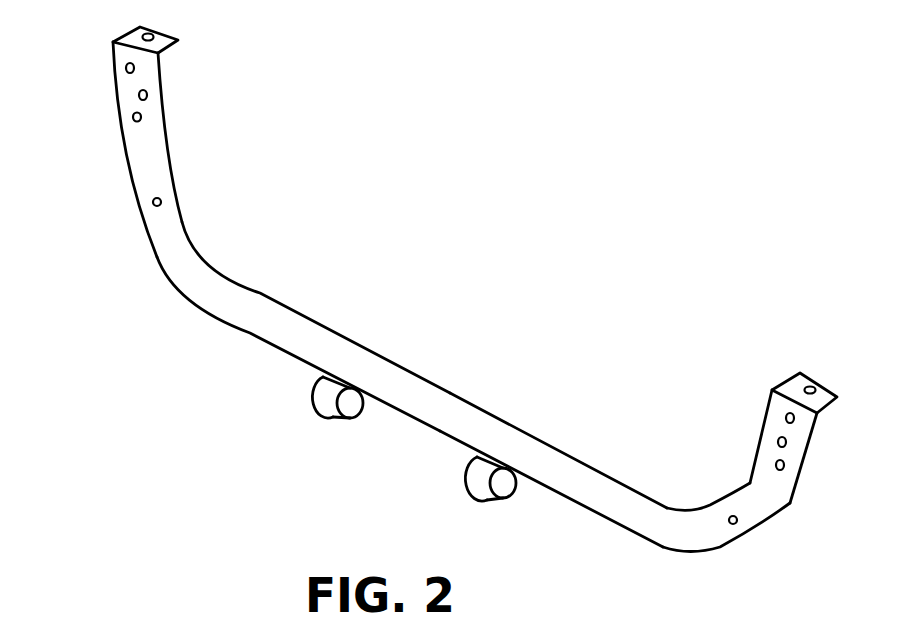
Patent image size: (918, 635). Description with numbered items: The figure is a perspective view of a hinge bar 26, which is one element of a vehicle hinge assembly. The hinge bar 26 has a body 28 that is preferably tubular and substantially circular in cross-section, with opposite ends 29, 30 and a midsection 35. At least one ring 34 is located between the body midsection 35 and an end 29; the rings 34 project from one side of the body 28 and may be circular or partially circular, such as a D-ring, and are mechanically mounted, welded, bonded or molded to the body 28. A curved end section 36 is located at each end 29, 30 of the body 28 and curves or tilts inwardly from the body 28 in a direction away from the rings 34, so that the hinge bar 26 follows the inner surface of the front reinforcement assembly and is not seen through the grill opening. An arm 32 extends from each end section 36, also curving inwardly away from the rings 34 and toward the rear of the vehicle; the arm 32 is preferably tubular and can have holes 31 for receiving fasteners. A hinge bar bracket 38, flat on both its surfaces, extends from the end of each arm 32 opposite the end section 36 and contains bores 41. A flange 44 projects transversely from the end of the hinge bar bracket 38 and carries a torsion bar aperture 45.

The hinge bar 26 is at (575, 483).
The body 28 is at (288, 338).
The end 29 is at (218, 268).
The end 30 is at (672, 510).
The holes 31 is at (734, 522).
The arm 32 is at (172, 197).
The ring 34 is at (331, 406).
The midsection 35 is at (446, 404).
The curved end section 36 is at (172, 268).
The hinge bar bracket 38 is at (143, 79).
The bores 41 is at (136, 119).
The flange 44 is at (829, 391).
The torsion bar aperture 45 is at (817, 385).